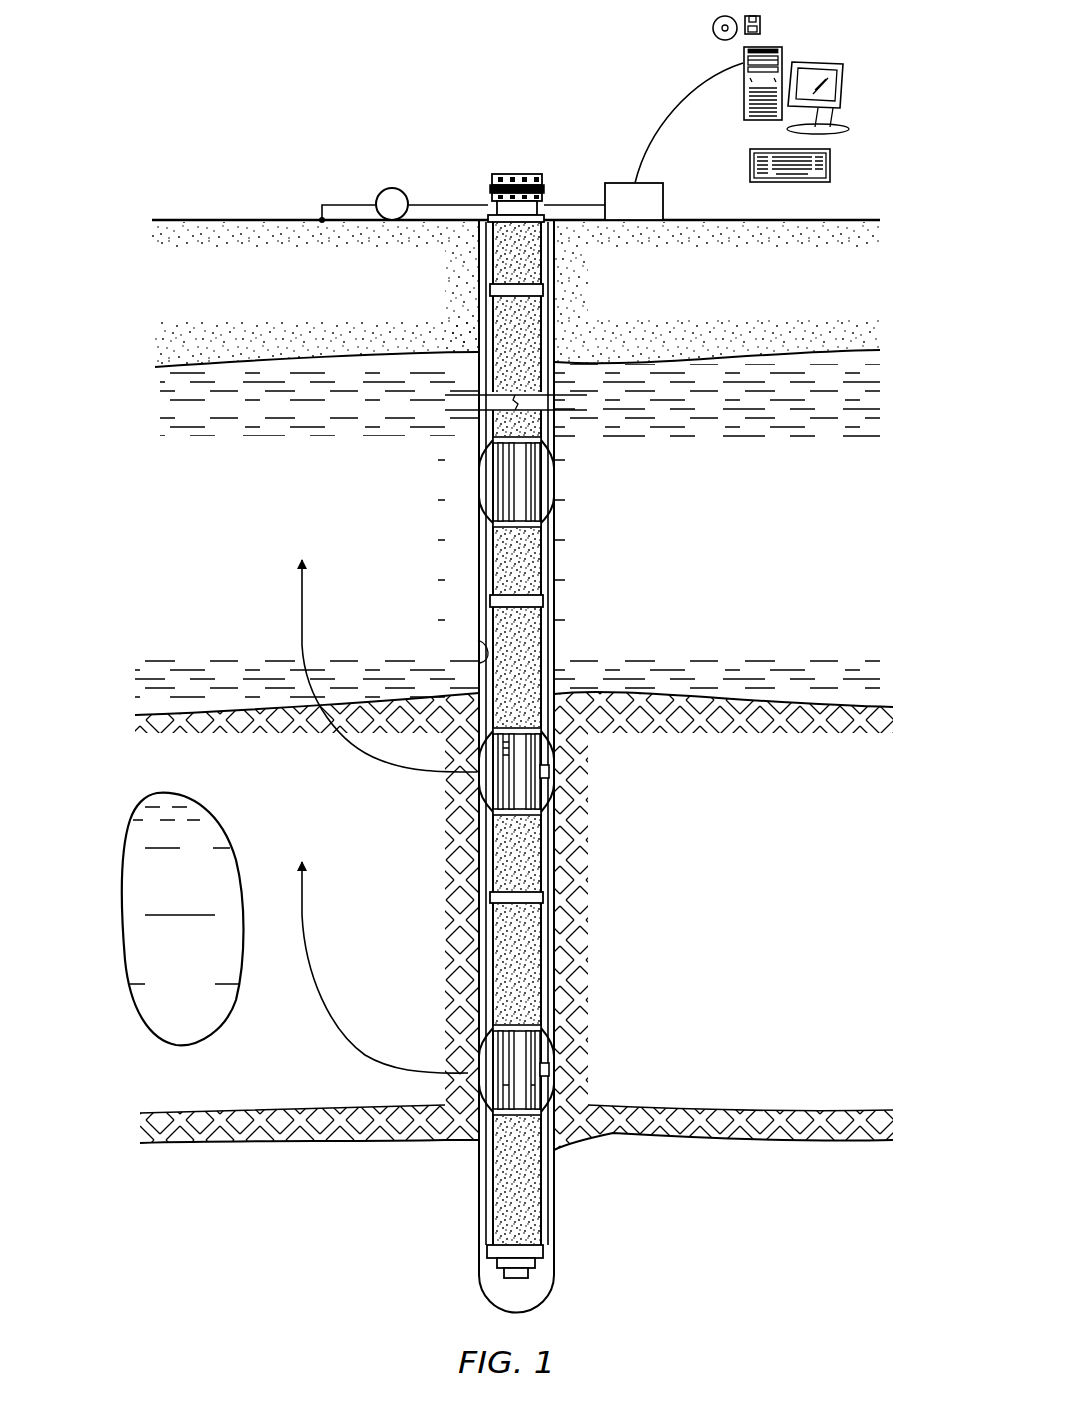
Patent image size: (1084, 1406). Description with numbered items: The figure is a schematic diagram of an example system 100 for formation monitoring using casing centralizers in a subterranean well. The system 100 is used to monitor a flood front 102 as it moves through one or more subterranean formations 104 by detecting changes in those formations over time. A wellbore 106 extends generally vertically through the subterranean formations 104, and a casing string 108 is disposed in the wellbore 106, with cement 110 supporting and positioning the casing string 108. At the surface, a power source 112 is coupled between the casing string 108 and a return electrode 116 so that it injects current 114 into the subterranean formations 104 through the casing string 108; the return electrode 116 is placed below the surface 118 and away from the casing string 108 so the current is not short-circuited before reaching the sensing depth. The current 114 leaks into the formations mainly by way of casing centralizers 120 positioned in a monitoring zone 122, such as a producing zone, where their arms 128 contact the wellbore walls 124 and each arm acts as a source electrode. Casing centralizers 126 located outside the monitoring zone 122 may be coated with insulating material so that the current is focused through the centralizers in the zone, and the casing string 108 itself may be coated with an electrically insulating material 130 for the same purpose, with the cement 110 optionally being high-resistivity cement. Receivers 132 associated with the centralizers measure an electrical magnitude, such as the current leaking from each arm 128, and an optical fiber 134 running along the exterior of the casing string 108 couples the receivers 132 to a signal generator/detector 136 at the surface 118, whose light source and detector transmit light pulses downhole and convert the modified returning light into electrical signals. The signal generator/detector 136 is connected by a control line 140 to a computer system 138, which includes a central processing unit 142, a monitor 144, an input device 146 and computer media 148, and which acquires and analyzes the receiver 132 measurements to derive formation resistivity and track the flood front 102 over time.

The system 100 is at (259, 143).
The flood front 102 is at (143, 795).
The subterranean formations 104 is at (217, 480).
The wellbore 106 is at (557, 540).
The casing string 108 is at (493, 540).
The cement 110 is at (548, 622).
The power source 112 is at (385, 190).
The current 114 is at (301, 595).
The return electrode 116 is at (322, 222).
The surface 118 is at (210, 220).
The casing centralizers 120 is at (556, 788).
The monitoring zone 122 is at (368, 909).
The wellbore walls 124 is at (478, 640).
The casing centralizers 126 is at (557, 472).
The arms 128 is at (505, 755).
The electrically insulating material 130 is at (515, 320).
The receivers 132 is at (549, 772).
The optical fiber 134 is at (557, 658).
The signal generator/detector 136 is at (606, 183).
The computer system 138 is at (798, 91).
The control line 140 is at (660, 108).
The central processing unit 142 is at (778, 47).
The monitor 144 is at (840, 98).
The input device 146 is at (833, 147).
The computer media 148 is at (725, 16).